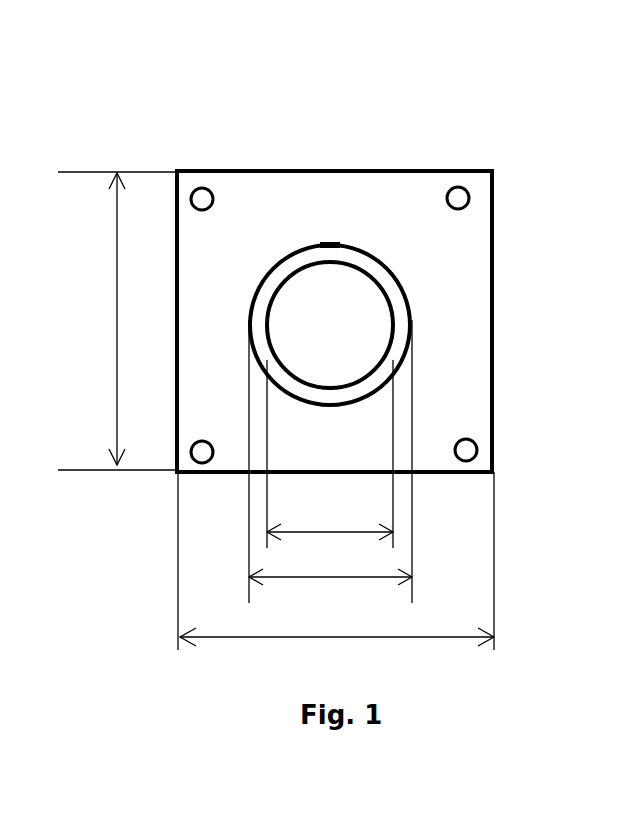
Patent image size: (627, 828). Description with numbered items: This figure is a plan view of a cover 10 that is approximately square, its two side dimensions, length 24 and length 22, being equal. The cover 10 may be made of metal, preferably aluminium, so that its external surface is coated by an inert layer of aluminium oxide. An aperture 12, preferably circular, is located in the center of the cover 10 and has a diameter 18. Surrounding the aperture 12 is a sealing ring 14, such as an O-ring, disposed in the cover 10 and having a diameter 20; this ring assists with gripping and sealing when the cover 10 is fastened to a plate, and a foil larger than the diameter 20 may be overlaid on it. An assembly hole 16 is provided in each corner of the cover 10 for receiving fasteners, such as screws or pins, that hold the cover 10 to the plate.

The cover 10 is at (418, 78).
The aperture 12 is at (338, 324).
The sealing ring 14 is at (386, 262).
The assembly hole 16 is at (470, 450).
The diameter of aperture 18 is at (330, 454).
The diameter of sealing rings 20 is at (330, 461).
The length 22 is at (336, 561).
The length 24 is at (117, 321).